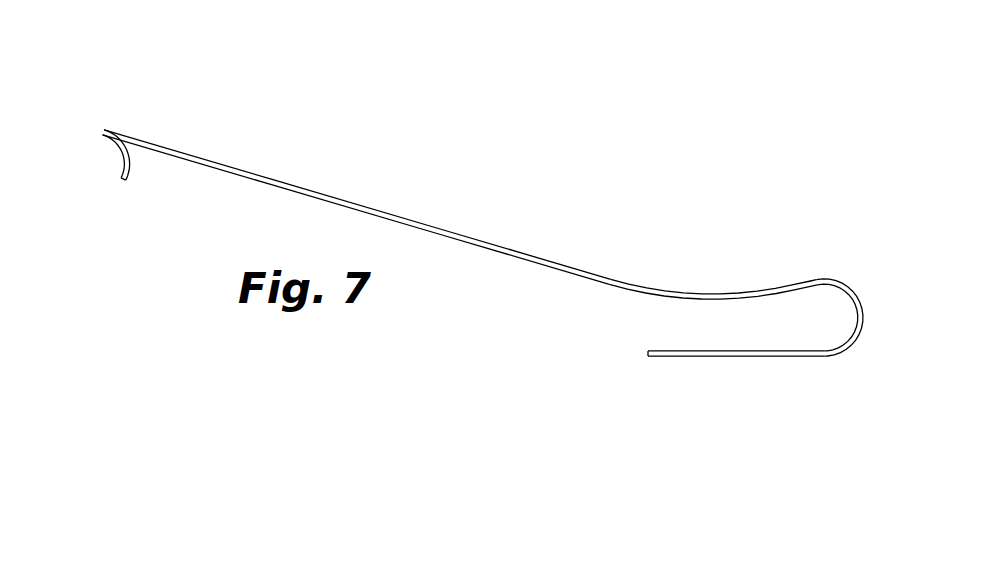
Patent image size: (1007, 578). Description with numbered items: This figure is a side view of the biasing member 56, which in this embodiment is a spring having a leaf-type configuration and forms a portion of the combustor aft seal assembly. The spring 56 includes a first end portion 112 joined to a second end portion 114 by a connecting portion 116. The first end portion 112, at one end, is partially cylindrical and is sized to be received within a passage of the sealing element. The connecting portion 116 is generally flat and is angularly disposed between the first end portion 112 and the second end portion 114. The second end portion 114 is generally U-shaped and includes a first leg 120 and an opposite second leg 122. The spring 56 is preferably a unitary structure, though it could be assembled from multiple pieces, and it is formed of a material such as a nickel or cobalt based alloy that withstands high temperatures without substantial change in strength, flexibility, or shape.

The biasing member 56 is at (613, 193).
The first end portion 112 is at (99, 127).
The second end portion 114 is at (856, 288).
The connecting portion 116 is at (425, 222).
The first leg 120 is at (743, 356).
The second leg 122 is at (777, 288).